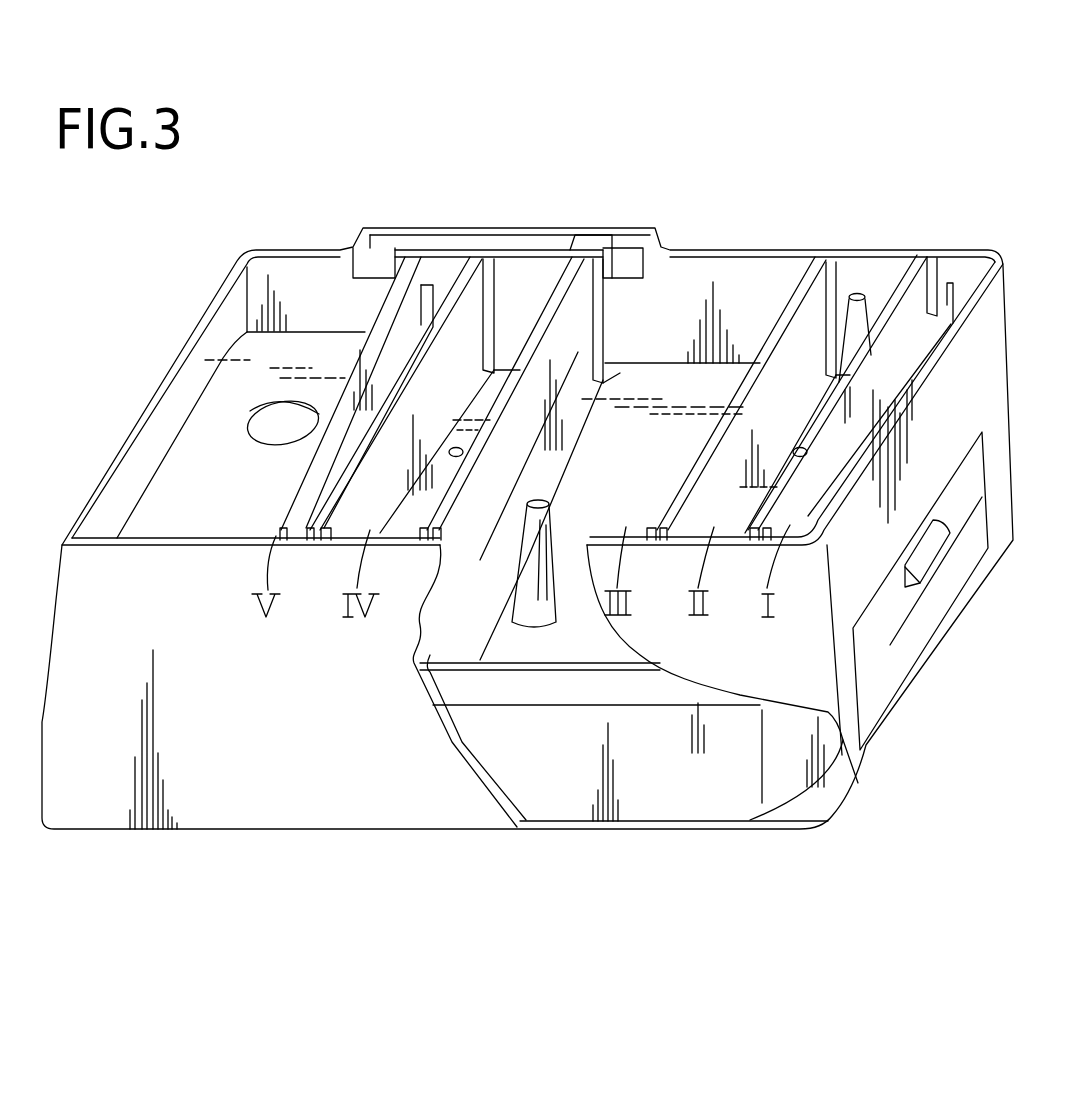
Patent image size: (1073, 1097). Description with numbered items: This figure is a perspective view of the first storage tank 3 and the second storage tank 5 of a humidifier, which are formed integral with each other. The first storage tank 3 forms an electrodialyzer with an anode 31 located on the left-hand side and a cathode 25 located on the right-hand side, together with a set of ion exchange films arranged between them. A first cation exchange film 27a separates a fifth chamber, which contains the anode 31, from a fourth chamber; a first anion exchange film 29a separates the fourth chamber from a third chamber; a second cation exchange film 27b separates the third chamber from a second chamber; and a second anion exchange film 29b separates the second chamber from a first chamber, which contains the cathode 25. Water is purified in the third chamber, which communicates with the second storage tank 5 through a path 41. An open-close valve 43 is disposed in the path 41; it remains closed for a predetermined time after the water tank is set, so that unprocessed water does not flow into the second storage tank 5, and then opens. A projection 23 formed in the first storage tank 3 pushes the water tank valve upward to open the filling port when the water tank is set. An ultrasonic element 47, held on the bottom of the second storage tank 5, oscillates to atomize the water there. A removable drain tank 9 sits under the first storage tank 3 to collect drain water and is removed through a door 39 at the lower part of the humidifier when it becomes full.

The first storage tank 3 is at (739, 270).
The second storage tank 5 is at (146, 440).
The drain tank 9 is at (699, 800).
The projection 23 is at (553, 500).
The cathode 25 is at (903, 374).
The first cation exchange film 27a is at (470, 295).
The second cation exchange film 27b is at (817, 292).
The first anion exchange film 29a is at (568, 325).
The second anion exchange film 29b is at (912, 302).
The anode 31 is at (433, 292).
The door 39 is at (890, 640).
The path 41 is at (547, 236).
The open-close valve 43 is at (592, 240).
The ultrasonic element 47 is at (270, 432).